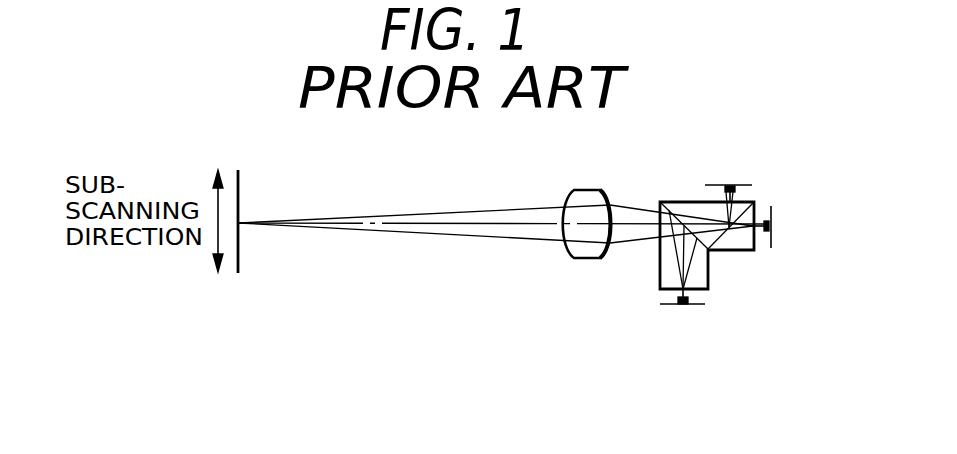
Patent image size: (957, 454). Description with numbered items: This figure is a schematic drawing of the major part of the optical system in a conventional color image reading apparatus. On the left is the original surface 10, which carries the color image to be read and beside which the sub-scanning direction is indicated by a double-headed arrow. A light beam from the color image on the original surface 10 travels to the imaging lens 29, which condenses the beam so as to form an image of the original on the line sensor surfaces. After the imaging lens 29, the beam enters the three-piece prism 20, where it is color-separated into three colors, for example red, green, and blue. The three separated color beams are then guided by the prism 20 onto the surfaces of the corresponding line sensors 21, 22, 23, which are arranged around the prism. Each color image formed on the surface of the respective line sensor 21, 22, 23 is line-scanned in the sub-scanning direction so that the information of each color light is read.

The original surface 10 is at (239, 185).
The imaging lens 29 is at (587, 189).
The 3P (three-piece) prism 20 is at (697, 272).
The line sensor 21 is at (740, 183).
The line sensor 22 is at (771, 248).
The line sensor 23 is at (693, 305).